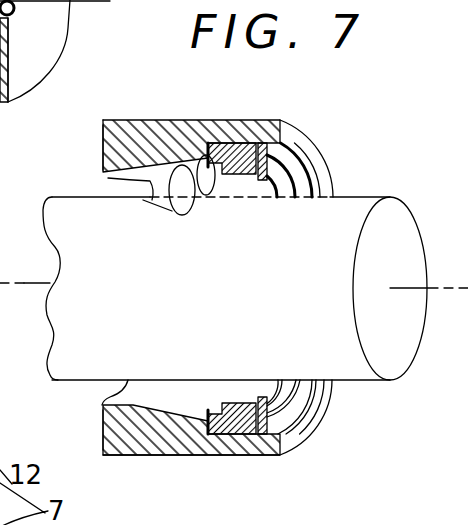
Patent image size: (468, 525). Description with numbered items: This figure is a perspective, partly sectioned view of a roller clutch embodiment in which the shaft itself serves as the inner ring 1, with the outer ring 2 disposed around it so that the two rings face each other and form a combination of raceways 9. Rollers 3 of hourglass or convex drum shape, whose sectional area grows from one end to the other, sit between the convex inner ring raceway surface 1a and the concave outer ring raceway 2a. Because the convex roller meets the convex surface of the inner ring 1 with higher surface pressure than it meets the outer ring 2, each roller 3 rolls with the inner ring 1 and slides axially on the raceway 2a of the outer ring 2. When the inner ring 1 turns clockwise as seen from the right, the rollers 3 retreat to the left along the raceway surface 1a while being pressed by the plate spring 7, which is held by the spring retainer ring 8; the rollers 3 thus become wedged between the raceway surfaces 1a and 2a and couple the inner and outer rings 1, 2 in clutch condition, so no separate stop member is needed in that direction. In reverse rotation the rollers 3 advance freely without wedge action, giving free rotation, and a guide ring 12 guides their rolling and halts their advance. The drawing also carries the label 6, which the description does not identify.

The inner ring 1 is at (353, 197).
The inner ring raceway surface 1a is at (106, 205).
The outer ring 2 is at (179, 120).
The outer ring raceway 2a is at (101, 174).
The rollers 3 is at (150, 197).
The axis of rotation 6 is at (30, 283).
The plate spring 7 is at (257, 190).
The spring retainer ring 8 is at (302, 135).
The raceways 9 is at (110, 387).
The guide ring 12 is at (240, 126).